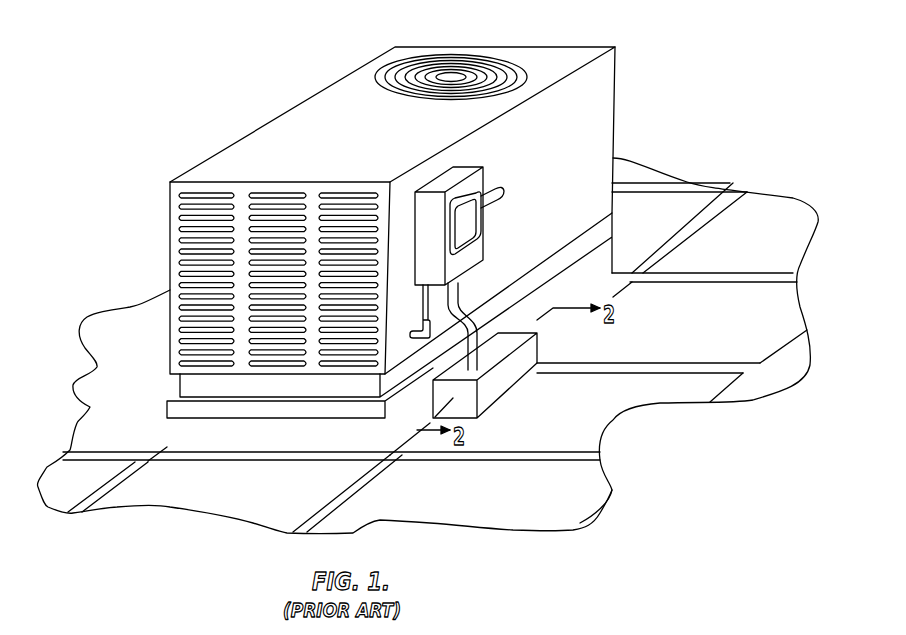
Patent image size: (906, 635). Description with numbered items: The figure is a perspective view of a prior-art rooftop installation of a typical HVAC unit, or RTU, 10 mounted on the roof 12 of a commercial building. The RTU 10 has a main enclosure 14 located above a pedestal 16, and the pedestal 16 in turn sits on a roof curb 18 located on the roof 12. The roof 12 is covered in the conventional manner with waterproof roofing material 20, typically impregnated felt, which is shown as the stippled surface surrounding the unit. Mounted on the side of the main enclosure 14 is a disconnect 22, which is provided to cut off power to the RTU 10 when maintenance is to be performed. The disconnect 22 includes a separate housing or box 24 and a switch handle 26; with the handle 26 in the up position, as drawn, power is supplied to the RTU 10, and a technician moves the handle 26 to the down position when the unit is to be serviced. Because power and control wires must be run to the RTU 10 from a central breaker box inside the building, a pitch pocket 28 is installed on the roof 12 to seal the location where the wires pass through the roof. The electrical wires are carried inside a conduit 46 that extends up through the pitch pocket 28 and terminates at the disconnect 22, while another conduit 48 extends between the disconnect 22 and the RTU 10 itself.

The HVAC unit 10 is at (359, 221).
The roof 12 is at (743, 188).
The main enclosure 14 is at (228, 155).
The pedestal 16 is at (193, 387).
The roof curb 18 is at (177, 432).
The roofing material 20 is at (653, 391).
The disconnect 22 is at (490, 174).
The housing 24 is at (432, 190).
The switch handle 26 is at (503, 196).
The pitch pocket 28 is at (478, 417).
The conduit 46 is at (459, 292).
The conduit 48 is at (420, 301).